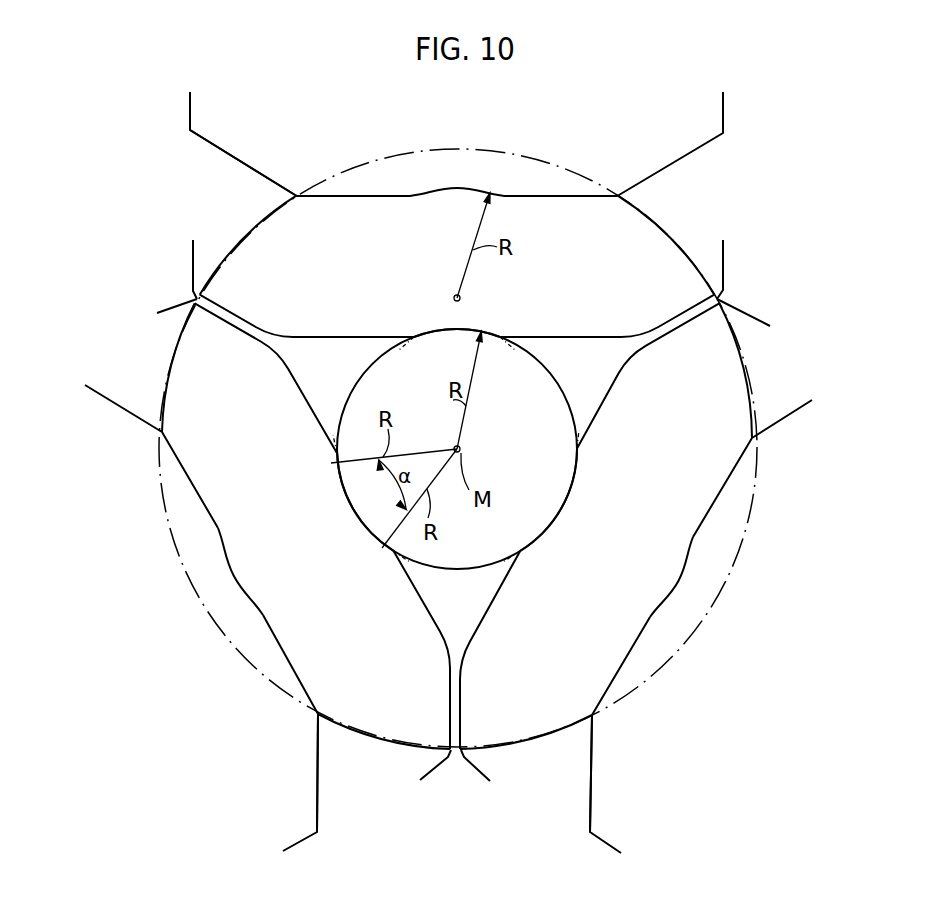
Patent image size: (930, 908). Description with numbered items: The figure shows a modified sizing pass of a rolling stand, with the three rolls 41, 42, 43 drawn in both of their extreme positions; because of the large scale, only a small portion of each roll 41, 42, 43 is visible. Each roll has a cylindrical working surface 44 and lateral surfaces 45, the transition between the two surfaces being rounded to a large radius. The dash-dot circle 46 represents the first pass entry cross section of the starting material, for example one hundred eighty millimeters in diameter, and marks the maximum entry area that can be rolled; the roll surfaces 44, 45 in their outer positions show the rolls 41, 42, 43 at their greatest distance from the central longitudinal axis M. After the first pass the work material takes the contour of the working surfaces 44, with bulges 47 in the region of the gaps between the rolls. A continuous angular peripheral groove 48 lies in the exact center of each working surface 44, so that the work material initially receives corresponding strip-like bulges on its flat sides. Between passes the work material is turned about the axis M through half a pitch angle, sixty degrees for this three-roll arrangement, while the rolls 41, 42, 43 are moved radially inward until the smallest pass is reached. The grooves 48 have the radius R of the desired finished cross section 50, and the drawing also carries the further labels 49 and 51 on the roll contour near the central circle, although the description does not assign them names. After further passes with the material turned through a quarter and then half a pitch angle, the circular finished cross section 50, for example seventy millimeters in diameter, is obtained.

The roll 41 is at (212, 132).
The roll 42 is at (308, 818).
The roll 43 is at (603, 812).
The cylindrical working surface 44 is at (370, 198).
The lateral surface 45 is at (240, 164).
The dash-dot circle 46 is at (391, 153).
The bulge 47 is at (674, 236).
The angular peripheral groove 48 is at (445, 191).
The arcuate cutting edge 49 is at (524, 341).
The finished cross section 50 is at (352, 392).
The straight cutting edge 51 is at (414, 604).